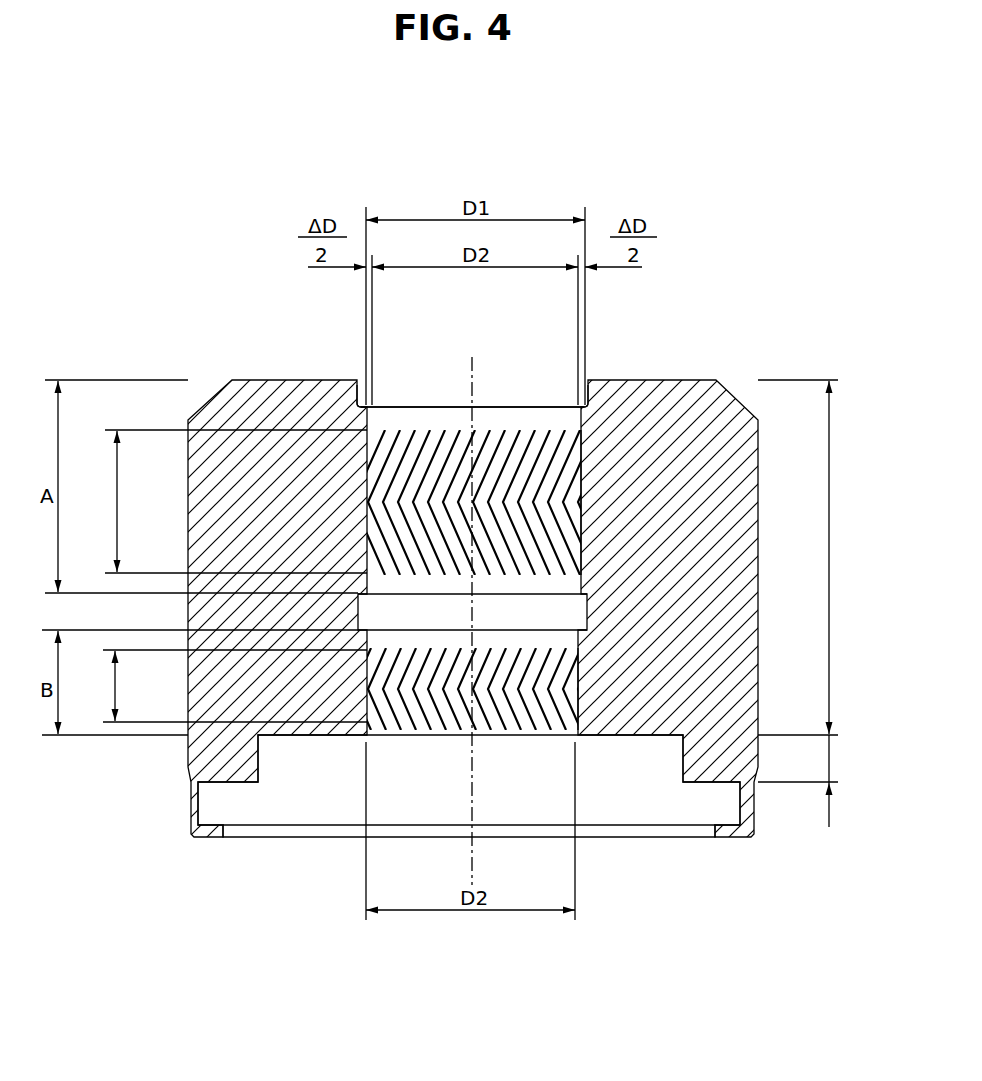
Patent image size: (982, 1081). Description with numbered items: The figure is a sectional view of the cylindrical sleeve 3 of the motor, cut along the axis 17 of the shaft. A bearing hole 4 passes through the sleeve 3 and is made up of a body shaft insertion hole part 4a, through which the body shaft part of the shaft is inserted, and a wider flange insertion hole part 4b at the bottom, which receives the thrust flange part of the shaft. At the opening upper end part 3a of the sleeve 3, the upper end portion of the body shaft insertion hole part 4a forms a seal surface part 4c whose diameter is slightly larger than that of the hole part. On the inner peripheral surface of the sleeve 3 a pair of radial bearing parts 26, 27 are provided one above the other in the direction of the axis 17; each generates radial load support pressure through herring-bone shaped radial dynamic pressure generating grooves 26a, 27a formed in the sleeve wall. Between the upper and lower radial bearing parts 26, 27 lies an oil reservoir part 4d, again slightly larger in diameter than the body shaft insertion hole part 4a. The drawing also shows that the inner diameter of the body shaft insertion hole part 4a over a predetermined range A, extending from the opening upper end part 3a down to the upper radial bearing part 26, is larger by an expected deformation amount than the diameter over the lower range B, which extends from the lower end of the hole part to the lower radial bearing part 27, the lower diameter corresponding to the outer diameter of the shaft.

The sleeve 3 is at (250, 379).
The opening upper end part 3a is at (417, 380).
The bearing hole 4 is at (513, 762).
The body shaft insertion hole part 4a is at (830, 562).
The flange insertion hole part 4b is at (830, 763).
The seal surface part 4c is at (525, 397).
The oil reservoir part 4d is at (570, 604).
The axis 17 is at (467, 851).
The radial bearing part 26 is at (117, 532).
The radial dynamic pressure generating grooves 26a is at (567, 466).
The radial bearing part 27 is at (115, 702).
The radial dynamic pressure generating grooves 27a is at (553, 670).